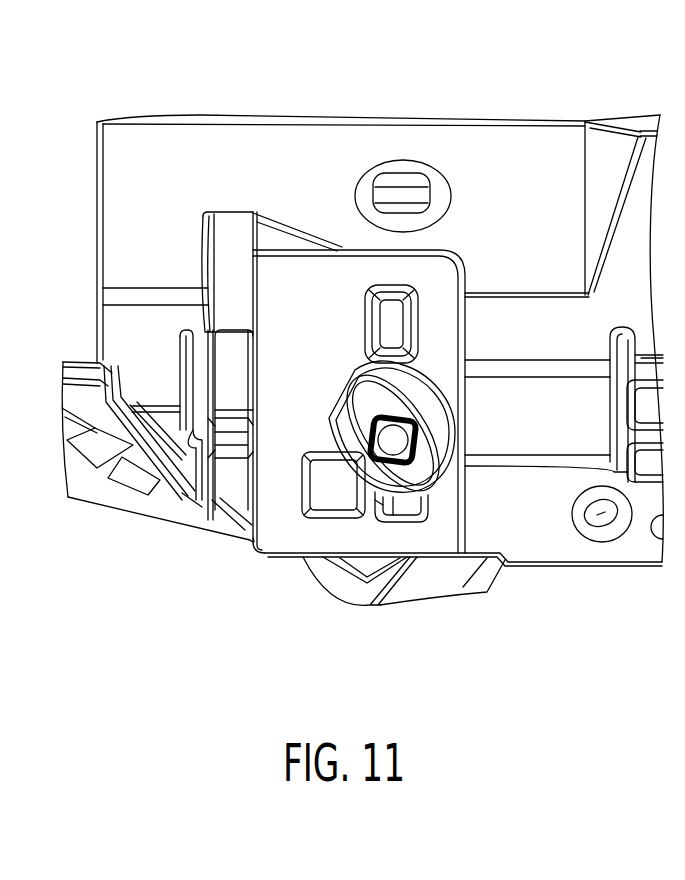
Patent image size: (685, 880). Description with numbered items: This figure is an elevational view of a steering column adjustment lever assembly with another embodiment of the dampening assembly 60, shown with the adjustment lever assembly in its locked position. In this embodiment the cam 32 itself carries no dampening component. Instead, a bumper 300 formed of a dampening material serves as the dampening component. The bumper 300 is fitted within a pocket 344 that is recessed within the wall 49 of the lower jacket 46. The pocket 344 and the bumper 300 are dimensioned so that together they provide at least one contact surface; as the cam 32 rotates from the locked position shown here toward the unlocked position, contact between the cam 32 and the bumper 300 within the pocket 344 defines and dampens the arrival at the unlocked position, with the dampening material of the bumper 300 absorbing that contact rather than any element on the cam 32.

The lower jacket 46 is at (510, 160).
The wall 49 is at (303, 430).
The dampening assembly 60 is at (350, 352).
The cam 32 is at (420, 488).
The bumper 300 is at (358, 460).
The pocket 344 is at (409, 528).